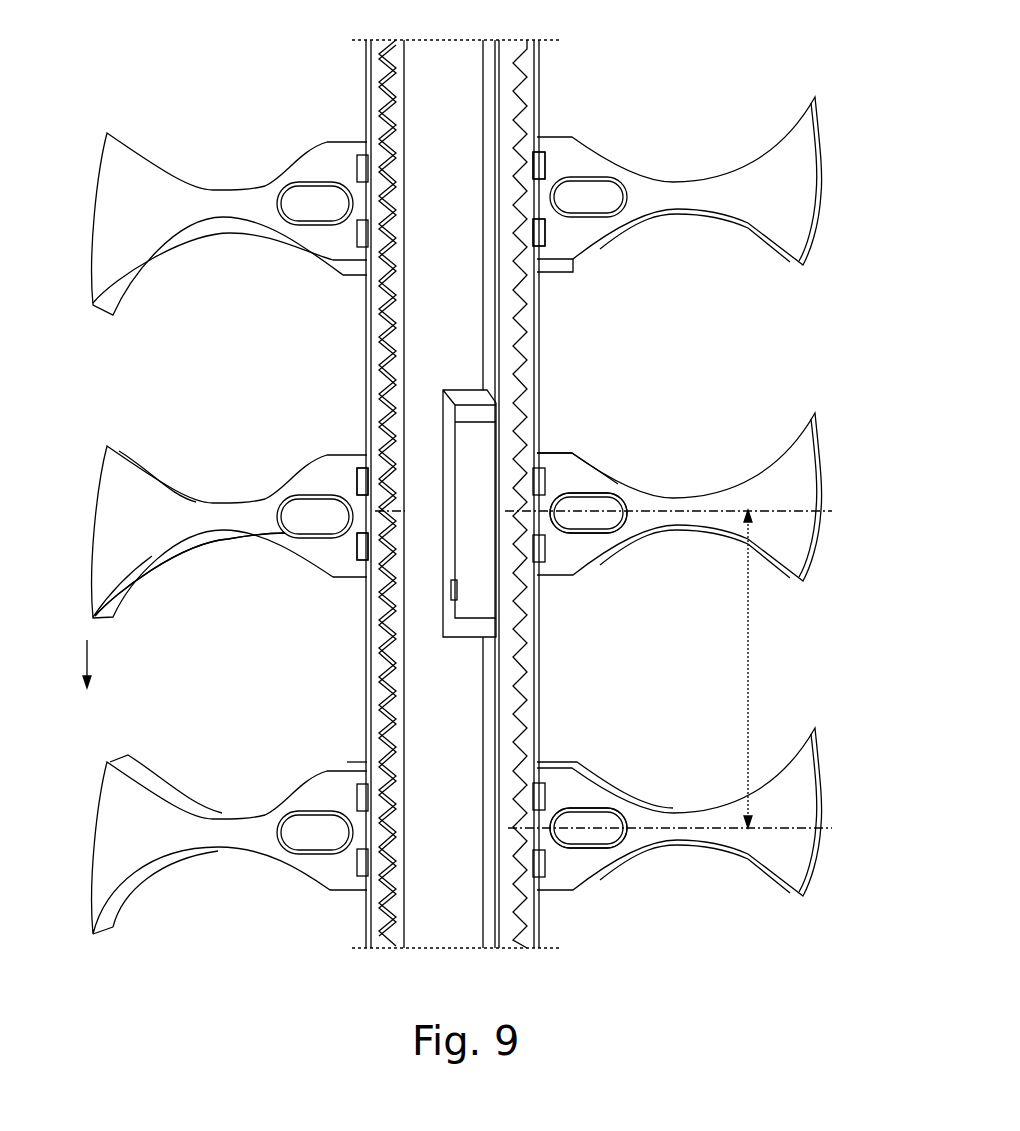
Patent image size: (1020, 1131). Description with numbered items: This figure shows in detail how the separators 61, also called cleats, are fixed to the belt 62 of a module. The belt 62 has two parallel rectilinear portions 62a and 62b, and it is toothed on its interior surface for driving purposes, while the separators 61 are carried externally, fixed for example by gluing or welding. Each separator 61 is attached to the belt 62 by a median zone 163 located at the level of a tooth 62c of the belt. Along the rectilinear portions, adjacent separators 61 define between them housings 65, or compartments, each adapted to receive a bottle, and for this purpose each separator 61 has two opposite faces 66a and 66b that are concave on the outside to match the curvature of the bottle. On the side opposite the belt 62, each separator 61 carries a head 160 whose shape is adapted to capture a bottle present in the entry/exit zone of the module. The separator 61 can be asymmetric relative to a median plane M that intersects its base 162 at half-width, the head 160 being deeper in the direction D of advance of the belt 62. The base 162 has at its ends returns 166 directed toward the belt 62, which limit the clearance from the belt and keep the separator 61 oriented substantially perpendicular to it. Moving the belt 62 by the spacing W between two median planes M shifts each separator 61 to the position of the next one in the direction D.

The separator 61 is at (163, 195).
The belt 62 is at (365, 75).
The rectilinear portion 62a is at (371, 283).
The rectilinear portion 62b is at (536, 340).
The tooth 62c is at (377, 513).
The housing 65 is at (741, 360).
The face 66a is at (205, 545).
The face 66b is at (163, 480).
The head 160 is at (113, 503).
The base 162 is at (557, 480).
The median zone 163 is at (548, 520).
The return 166 is at (540, 137).
The median plane M is at (825, 507).
The spacing W is at (763, 669).
The direction of advance D is at (95, 664).